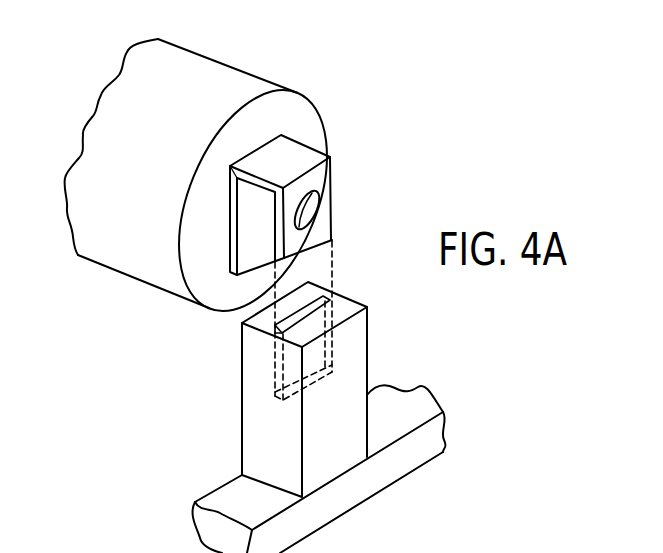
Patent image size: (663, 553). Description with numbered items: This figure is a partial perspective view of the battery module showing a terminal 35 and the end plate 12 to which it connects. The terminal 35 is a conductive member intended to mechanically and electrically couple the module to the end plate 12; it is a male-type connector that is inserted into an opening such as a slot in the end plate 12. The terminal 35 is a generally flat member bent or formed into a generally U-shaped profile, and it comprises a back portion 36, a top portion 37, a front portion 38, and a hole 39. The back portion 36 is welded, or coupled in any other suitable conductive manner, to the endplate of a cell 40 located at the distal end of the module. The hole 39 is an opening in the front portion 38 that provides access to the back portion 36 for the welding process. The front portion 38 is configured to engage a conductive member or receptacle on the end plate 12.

The end plate 12 is at (408, 408).
The terminal 35 is at (352, 159).
The back portion 36 is at (247, 228).
The top portion 37 is at (298, 152).
The front portion 38 is at (294, 244).
The hole 39 is at (305, 211).
The cell 40 is at (223, 87).